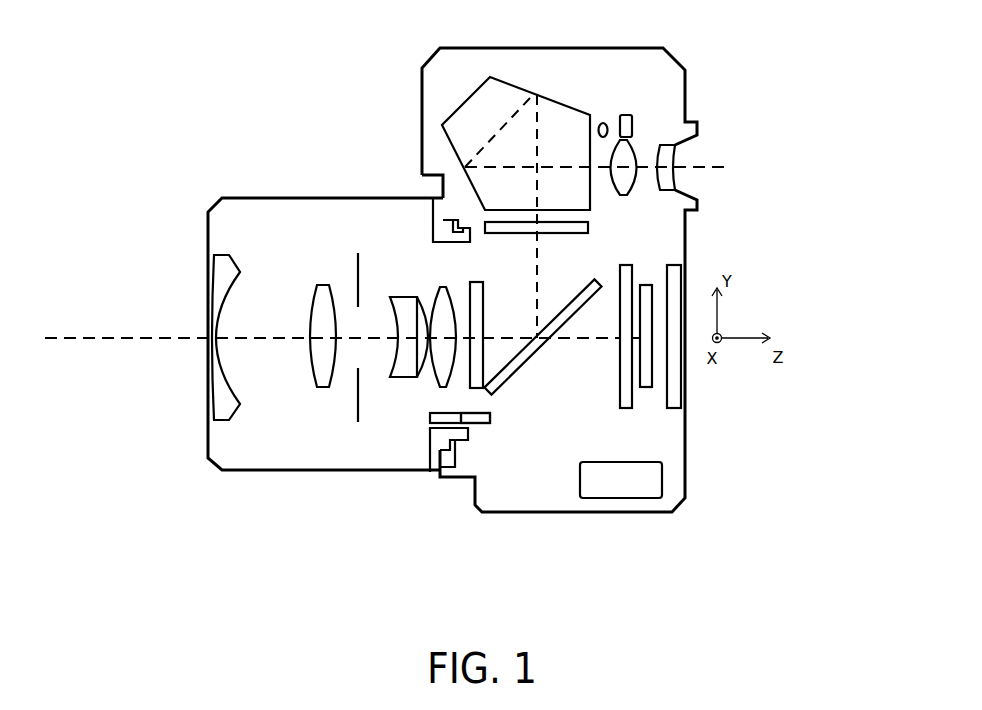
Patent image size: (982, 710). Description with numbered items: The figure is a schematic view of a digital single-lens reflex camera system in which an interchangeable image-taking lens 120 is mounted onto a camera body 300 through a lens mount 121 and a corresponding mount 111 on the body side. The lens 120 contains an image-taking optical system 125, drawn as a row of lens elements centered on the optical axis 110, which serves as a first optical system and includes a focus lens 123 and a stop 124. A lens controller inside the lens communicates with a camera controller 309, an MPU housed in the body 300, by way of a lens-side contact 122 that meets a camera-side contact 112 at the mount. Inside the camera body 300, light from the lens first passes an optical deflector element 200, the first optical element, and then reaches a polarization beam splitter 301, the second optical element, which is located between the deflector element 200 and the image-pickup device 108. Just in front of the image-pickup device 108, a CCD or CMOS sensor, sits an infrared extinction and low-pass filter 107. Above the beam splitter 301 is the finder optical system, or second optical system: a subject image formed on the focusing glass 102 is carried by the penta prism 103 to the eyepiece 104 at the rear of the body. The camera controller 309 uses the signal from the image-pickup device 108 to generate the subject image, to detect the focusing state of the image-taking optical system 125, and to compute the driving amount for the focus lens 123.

The camera body 300 is at (487, 47).
The image-taking lens 120 is at (248, 203).
The lens mount 121 is at (432, 442).
The camera mount 111 is at (458, 455).
The optical axis 110 is at (117, 338).
The image-taking optical system 125 is at (212, 250).
The focus lens 123 is at (316, 357).
The stop 124 is at (355, 393).
The lens-side contact 122 is at (430, 418).
The camera-side contact 112 is at (490, 417).
The optical deflector element 200 is at (482, 300).
The polarization beam splitter 301 is at (526, 354).
The penta prism 103 is at (555, 120).
The focusing glass 102 is at (553, 237).
The eyepiece 104 is at (678, 198).
The infrared extinction and low-pass filter 107 is at (619, 373).
The image-pickup device 108 is at (653, 387).
The camera controller 309 is at (617, 493).